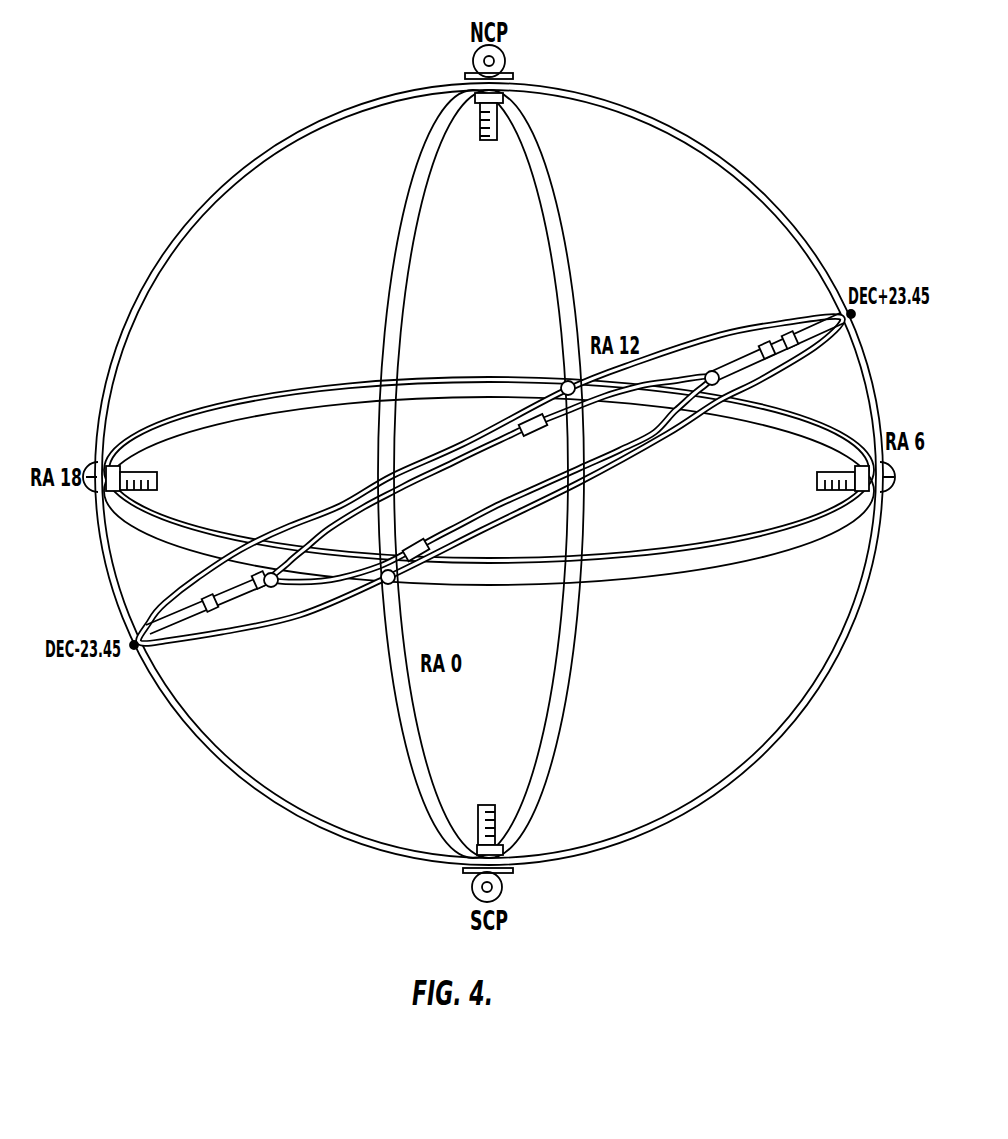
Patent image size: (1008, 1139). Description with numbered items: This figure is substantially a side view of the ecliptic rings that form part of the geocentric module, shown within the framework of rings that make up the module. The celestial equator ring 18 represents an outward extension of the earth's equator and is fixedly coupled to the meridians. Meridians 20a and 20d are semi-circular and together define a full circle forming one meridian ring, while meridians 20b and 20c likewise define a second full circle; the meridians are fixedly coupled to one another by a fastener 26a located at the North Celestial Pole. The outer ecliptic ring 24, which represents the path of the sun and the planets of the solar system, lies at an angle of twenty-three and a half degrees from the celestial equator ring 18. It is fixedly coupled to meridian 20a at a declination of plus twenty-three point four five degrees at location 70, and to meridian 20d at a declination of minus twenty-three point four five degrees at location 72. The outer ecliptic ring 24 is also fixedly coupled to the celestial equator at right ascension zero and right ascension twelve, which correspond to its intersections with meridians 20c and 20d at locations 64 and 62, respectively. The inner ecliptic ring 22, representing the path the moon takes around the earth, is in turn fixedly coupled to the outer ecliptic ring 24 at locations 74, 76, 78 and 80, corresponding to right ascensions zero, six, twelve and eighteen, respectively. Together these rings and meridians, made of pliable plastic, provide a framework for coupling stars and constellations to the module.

The celestial equator ring 18 is at (663, 570).
The meridian 20a is at (741, 170).
The meridian 20b is at (562, 222).
The meridian 20c is at (420, 158).
The meridian 20d is at (373, 100).
The inner ecliptic ring 22 is at (674, 376).
The outer ecliptic ring 24 is at (657, 352).
The fastener 26a is at (480, 118).
The coupling location at right ascension 12 62 is at (562, 383).
The coupling location at right ascension 0 64 is at (390, 585).
The coupling location at +23.45 degrees declination 70 is at (851, 305).
The coupling location at −23.45 degrees declination 72 is at (135, 658).
The coupling location at right ascension 0 74 is at (417, 540).
The coupling location at right ascension 6 76 is at (660, 399).
The coupling location at right ascension 12 78 is at (487, 447).
The coupling location at right ascension 18 80 is at (284, 576).